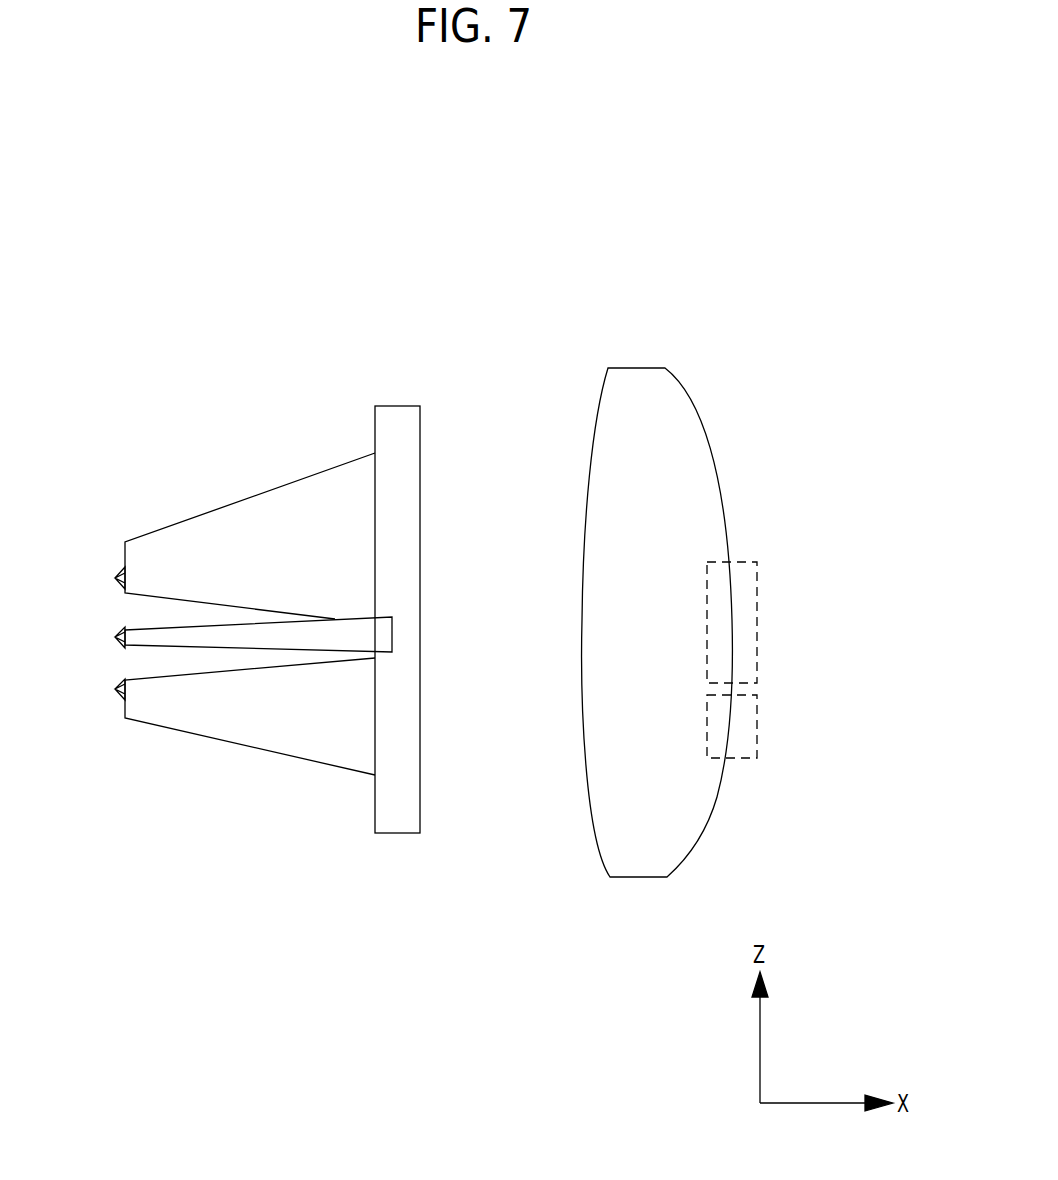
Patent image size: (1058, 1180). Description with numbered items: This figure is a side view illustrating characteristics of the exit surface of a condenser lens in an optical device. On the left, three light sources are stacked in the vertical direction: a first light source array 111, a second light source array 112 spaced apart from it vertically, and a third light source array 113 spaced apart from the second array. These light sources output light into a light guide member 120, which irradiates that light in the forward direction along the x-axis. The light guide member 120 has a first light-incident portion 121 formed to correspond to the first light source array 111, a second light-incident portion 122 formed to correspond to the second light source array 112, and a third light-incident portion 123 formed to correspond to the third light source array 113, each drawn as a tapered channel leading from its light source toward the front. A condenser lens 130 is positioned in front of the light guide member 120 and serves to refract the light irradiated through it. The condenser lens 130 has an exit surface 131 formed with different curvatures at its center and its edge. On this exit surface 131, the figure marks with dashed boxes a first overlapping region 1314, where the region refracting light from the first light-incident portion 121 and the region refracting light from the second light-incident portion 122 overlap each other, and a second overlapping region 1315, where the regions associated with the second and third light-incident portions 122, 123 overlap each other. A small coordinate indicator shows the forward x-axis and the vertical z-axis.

The first light source array 111 is at (114, 578).
The second light source array 112 is at (114, 637).
The third light source array 113 is at (114, 689).
The light guide member 120 is at (268, 595).
The first light-incident portion 121 is at (182, 545).
The second light-incident portion 122 is at (173, 637).
The third light-incident portion 123 is at (247, 710).
The condenser lens 130 is at (707, 556).
The exit surface 131 is at (717, 797).
The first overlapping region 1314 is at (758, 614).
The second overlapping region 1315 is at (758, 724).